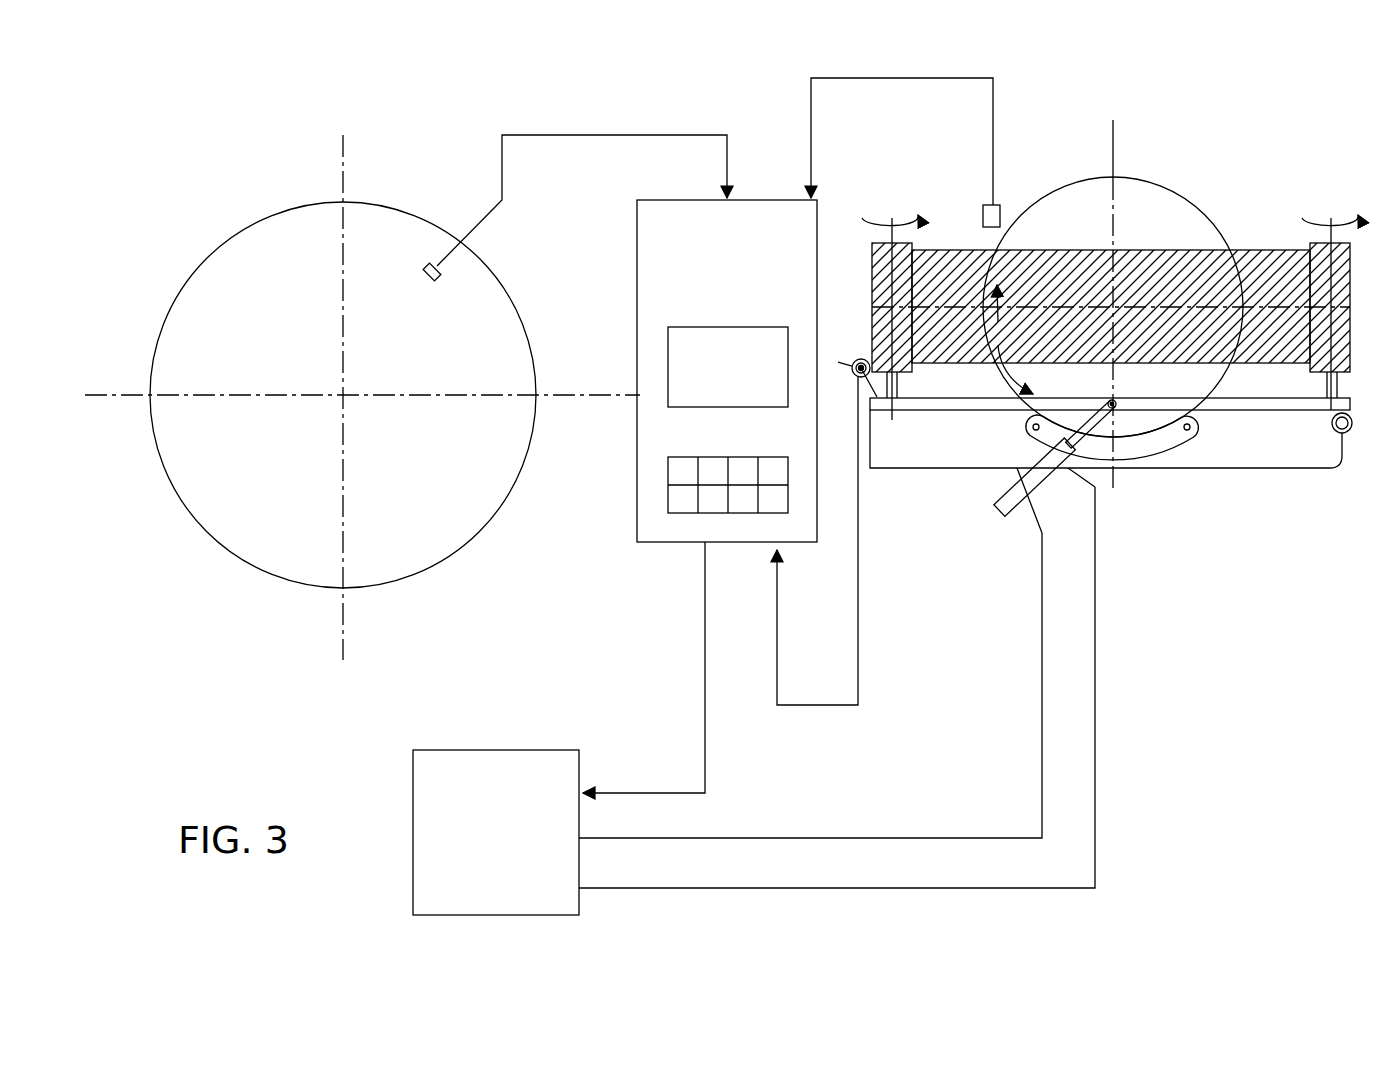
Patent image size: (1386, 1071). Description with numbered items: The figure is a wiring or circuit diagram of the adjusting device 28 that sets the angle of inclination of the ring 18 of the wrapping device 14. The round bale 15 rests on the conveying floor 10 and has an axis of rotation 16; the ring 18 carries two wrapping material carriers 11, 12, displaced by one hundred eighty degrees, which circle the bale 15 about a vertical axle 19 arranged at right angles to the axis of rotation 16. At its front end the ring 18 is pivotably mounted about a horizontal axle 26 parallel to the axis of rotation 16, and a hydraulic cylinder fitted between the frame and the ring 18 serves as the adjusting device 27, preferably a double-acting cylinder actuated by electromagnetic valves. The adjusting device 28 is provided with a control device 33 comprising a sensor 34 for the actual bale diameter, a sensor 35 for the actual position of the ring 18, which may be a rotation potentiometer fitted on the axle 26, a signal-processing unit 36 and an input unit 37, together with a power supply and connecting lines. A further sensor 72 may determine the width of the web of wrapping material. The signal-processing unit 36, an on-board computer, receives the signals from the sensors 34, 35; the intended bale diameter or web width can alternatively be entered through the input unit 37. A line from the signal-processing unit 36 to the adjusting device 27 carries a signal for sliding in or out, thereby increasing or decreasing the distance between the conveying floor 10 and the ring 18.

The conveying floor 10 is at (1148, 443).
The wrapping material carrier 11 is at (900, 262).
The wrapping material carrier 12 is at (1310, 255).
The wrapping device 14 is at (1213, 480).
The round bale 15 is at (410, 384).
The axis of rotation 16 is at (1113, 307).
The ring 18 is at (936, 405).
The vertical axle 19 is at (1112, 157).
The horizontal axle 26 is at (847, 377).
The adjusting device 27 is at (1013, 527).
The adjusting device 28 is at (580, 612).
The control device 33 is at (755, 237).
The sensor 34 is at (418, 262).
The sensor 35 is at (853, 358).
The signal-processing unit 36 is at (678, 394).
The input unit 37 is at (668, 484).
The sensor 72 is at (981, 62).